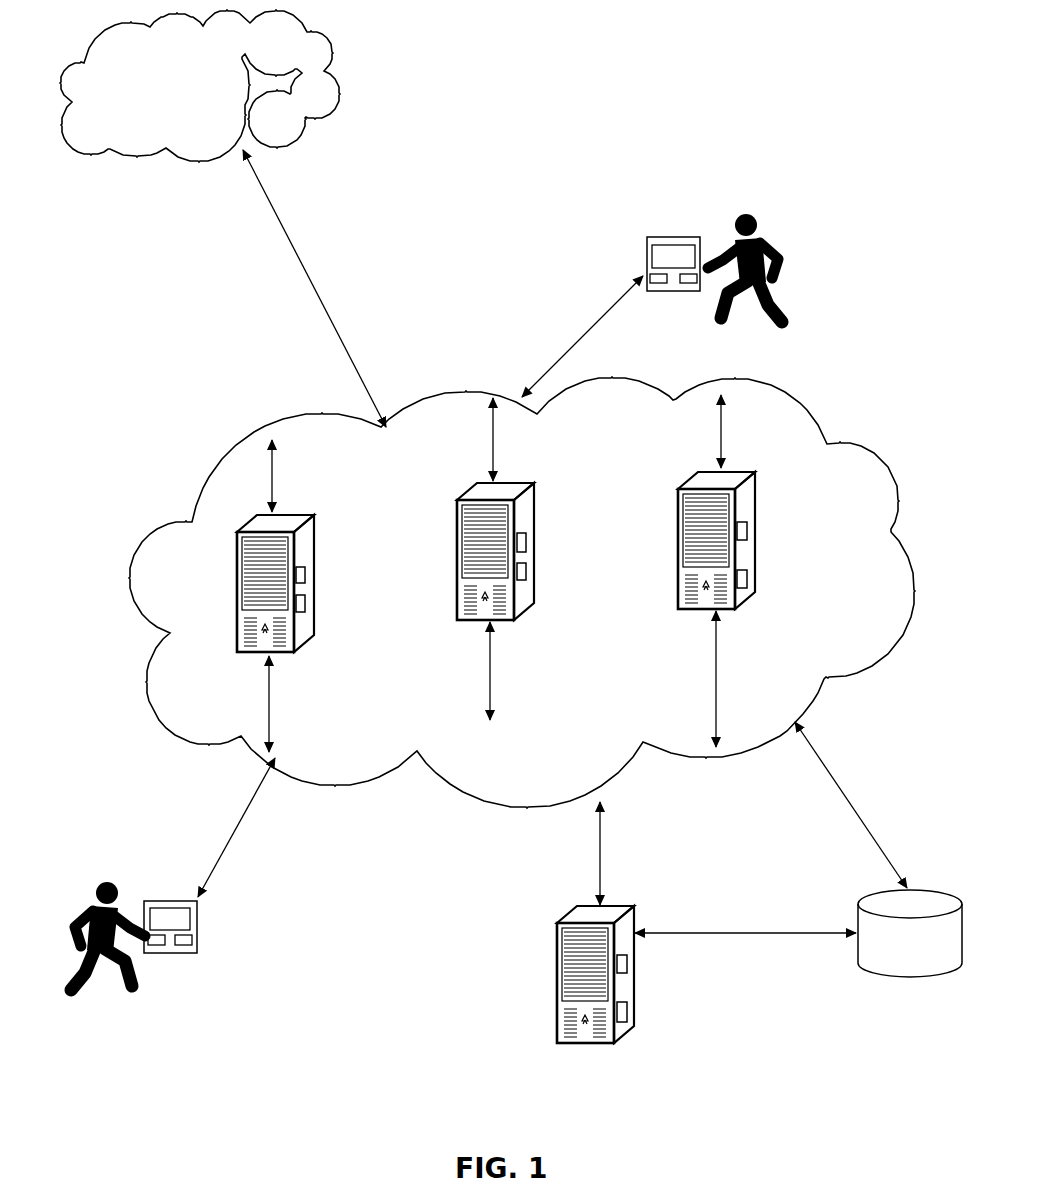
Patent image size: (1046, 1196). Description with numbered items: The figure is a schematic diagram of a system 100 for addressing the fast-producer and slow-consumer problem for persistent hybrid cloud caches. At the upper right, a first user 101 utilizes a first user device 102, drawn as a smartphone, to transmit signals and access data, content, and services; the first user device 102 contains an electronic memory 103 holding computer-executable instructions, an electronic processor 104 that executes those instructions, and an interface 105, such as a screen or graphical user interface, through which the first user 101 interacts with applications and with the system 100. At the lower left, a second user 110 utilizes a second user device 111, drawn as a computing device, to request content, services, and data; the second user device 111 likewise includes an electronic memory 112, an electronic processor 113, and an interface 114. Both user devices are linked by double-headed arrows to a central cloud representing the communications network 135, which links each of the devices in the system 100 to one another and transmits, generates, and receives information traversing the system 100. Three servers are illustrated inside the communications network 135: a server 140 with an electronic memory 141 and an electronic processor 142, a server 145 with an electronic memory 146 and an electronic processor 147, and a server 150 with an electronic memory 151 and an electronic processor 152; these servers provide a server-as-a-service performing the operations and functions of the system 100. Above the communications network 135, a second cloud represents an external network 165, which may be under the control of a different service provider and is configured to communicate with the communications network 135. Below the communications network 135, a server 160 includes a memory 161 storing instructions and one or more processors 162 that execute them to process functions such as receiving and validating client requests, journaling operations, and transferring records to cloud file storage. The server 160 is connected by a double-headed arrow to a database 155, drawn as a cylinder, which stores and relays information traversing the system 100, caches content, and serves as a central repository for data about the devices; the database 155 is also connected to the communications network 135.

The system 100 is at (140, 300).
The first user 101 is at (780, 323).
The first user device 102 is at (644, 256).
The electronic memory 103 is at (658, 283).
The electronic processor 104 is at (686, 283).
The interface 105 is at (674, 245).
The second user 110 is at (70, 985).
The second user device 111 is at (204, 917).
The electronic memory 112 is at (155, 945).
The electronic processor 113 is at (183, 945).
The interface 114 is at (170, 908).
The communications network 135 is at (131, 557).
The server 140 is at (284, 583).
The electronic memory 141 is at (306, 573).
The electronic processor 142 is at (306, 601).
The server 145 is at (506, 551).
The electronic memory 146 is at (527, 541).
The electronic processor 147 is at (527, 571).
The server 150 is at (717, 540).
The electronic memory 151 is at (748, 531).
The electronic processor 152 is at (748, 578).
The database 155 is at (910, 933).
The server 160 is at (618, 974).
The memory 161 is at (630, 1011).
The processors 162 is at (630, 964).
The external network 165 is at (304, 117).